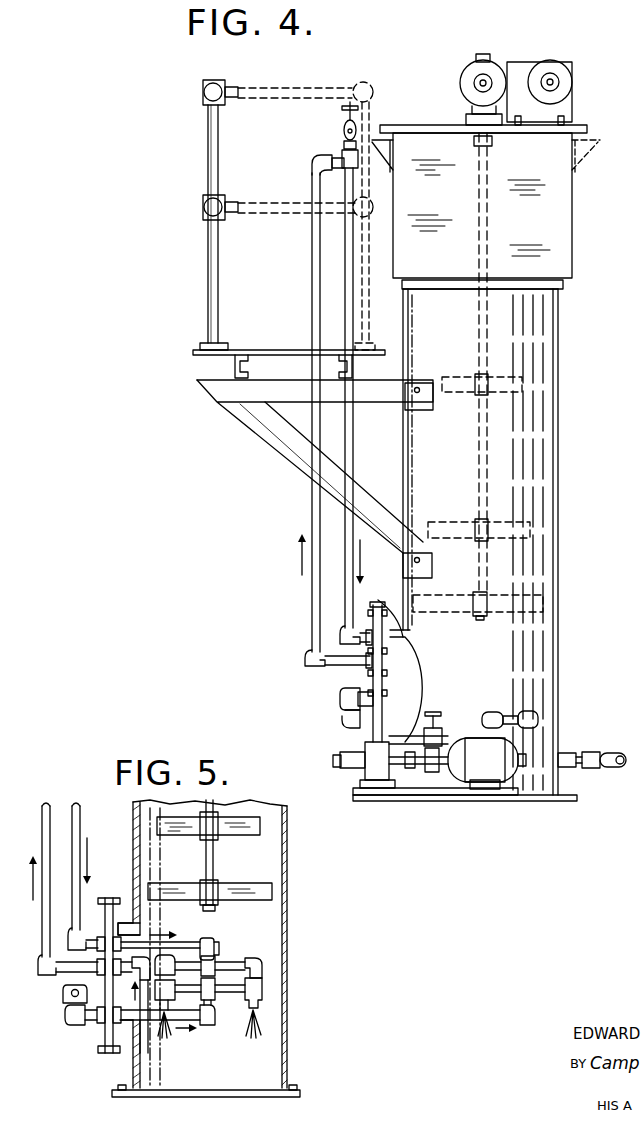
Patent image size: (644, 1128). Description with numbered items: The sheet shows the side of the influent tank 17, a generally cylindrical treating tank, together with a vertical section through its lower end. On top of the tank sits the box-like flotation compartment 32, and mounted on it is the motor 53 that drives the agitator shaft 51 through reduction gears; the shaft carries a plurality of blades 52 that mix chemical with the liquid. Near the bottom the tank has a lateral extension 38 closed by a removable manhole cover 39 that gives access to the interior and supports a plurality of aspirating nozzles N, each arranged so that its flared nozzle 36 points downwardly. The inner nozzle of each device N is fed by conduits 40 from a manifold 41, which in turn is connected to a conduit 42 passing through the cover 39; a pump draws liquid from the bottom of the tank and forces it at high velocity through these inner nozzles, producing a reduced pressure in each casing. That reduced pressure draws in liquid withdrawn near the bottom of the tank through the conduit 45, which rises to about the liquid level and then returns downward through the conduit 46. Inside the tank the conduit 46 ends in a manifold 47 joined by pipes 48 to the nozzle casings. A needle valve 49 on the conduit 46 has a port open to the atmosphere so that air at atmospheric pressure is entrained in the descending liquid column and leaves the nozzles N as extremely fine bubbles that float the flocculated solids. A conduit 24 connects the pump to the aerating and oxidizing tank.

In FIG. 4, the influent tank 17 is at (556, 484).
In FIG. 5, the influent tank 17 is at (282, 932).
In FIG. 4, the conduit 24 is at (538, 720).
In FIG. 4, the flotation compartment 32 is at (563, 215).
In FIG. 5, the flared nozzle 36 is at (259, 1010).
In FIG. 4, the lateral extension 38 is at (393, 679).
In FIG. 4, the manhole cover 39 is at (378, 601).
In FIG. 5, the manhole cover 39 is at (107, 923).
In FIG. 5, the conduits 40 is at (228, 994).
In FIG. 5, the manifold 41 is at (208, 1024).
In FIG. 5, the conduit 42 is at (130, 1022).
In FIG. 4, the conduit 45 is at (311, 486).
In FIG. 5, the conduit 45 is at (44, 806).
In FIG. 4, the conduit 46 is at (354, 437).
In FIG. 5, the conduit 46 is at (81, 813).
In FIG. 5, the manifold 47 is at (208, 939).
In FIG. 5, the pipes 48 is at (221, 962).
In FIG. 4, the needle valve 49 is at (357, 127).
In FIG. 4, the shaft 51 is at (489, 441).
In FIG. 4, the blades 52 is at (523, 385).
In FIG. 4, the motor 53 is at (560, 77).
In FIG. 5, the aspirating nozzle N is at (262, 986).